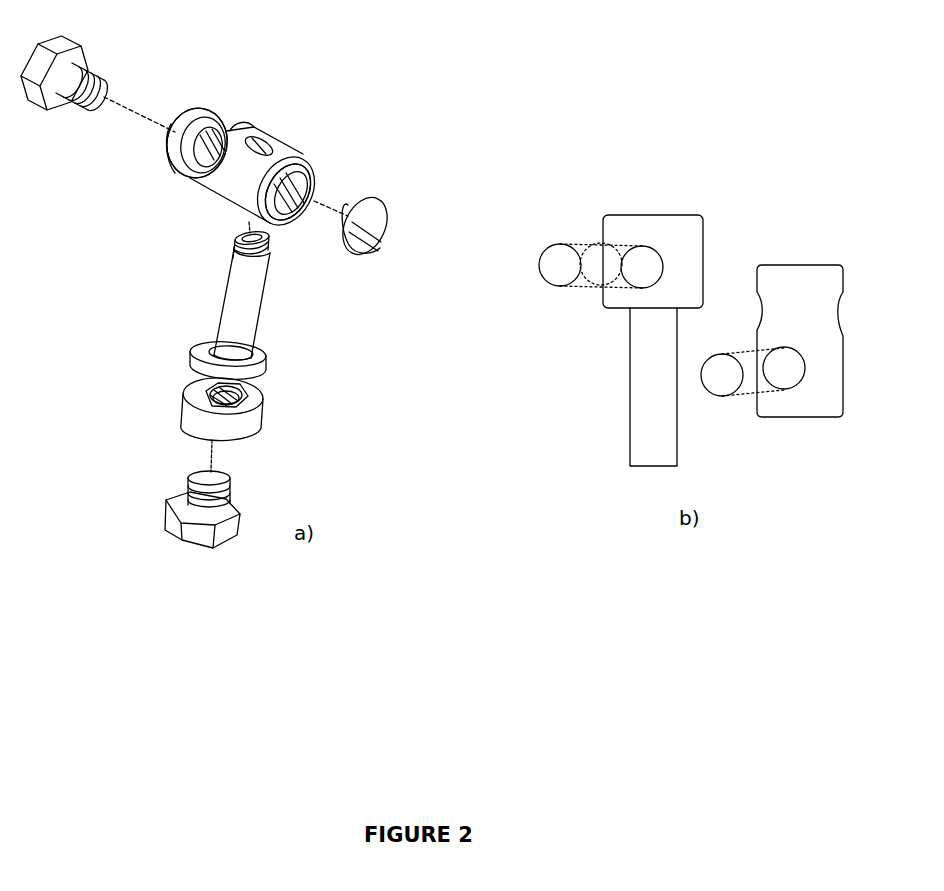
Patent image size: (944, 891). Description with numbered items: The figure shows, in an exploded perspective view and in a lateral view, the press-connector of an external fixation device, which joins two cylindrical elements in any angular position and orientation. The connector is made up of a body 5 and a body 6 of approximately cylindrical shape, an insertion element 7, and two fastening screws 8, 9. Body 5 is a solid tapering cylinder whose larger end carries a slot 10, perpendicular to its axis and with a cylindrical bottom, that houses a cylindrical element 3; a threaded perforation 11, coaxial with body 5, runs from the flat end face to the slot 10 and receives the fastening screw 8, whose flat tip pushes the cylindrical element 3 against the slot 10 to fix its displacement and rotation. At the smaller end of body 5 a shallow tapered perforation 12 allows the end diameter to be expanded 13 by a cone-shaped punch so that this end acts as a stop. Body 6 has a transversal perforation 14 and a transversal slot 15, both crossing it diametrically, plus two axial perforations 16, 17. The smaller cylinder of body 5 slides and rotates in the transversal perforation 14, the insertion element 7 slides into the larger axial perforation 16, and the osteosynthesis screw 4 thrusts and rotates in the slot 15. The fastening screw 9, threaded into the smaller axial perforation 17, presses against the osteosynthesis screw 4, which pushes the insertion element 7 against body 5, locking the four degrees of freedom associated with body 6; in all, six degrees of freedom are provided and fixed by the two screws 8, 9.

The cylindrical element 3 is at (640, 268).
The osteosynthesis screw 4 is at (783, 368).
The body 5 is at (235, 305).
The body 6 is at (247, 163).
The insertion element 7 is at (355, 215).
The fastening screw 8 is at (163, 517).
The fastening screw 9 is at (30, 78).
The slot 10 is at (191, 383).
The threaded perforation 11 is at (218, 448).
The tapered perforation 12 is at (252, 236).
The expanded end diameter 13 is at (222, 243).
The transversal perforation 14 is at (276, 138).
The transversal slot 15 is at (238, 117).
The axial perforation 16 is at (293, 180).
The axial perforation 17 is at (176, 119).